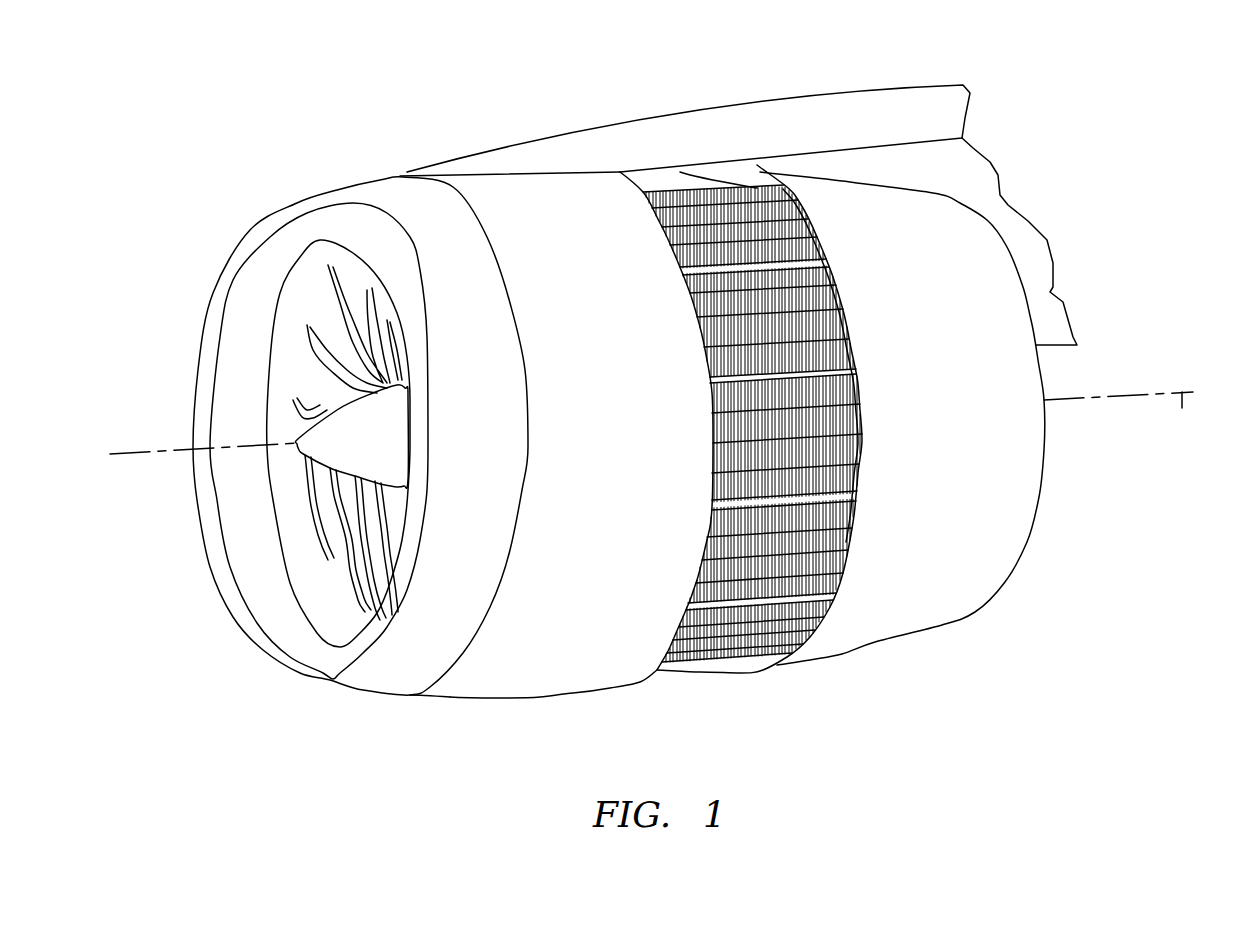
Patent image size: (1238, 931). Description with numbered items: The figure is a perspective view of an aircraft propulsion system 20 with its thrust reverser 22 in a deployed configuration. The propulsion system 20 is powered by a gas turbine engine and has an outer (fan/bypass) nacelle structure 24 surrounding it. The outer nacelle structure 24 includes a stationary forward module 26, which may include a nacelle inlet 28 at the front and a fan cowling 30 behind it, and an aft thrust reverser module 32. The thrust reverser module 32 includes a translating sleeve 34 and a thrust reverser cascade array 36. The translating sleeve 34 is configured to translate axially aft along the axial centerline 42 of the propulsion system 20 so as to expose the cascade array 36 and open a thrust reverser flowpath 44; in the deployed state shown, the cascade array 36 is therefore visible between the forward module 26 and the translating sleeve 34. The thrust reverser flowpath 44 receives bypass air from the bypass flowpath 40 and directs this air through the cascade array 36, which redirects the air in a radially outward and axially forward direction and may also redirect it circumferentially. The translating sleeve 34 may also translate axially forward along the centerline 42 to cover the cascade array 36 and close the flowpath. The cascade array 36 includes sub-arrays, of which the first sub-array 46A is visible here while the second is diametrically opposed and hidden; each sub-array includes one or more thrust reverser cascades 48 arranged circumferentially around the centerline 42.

The aircraft propulsion system 20 is at (223, 122).
The thrust reverser 22 is at (717, 152).
The outer nacelle structure 24 is at (370, 160).
The stationary forward module 26 is at (340, 187).
The nacelle inlet 28 is at (365, 698).
The fan cowling 30 is at (483, 700).
The thrust reverser module 32 is at (790, 675).
The translating sleeve 34 is at (858, 650).
The thrust reverser cascade array 36 is at (678, 678).
The bypass flowpath 40 is at (350, 442).
The axial centerline 42 is at (1178, 422).
The thrust reverser flowpath 44 is at (763, 223).
The first sub-array 46A is at (857, 468).
The thrust reverser cascade 48 is at (680, 242).